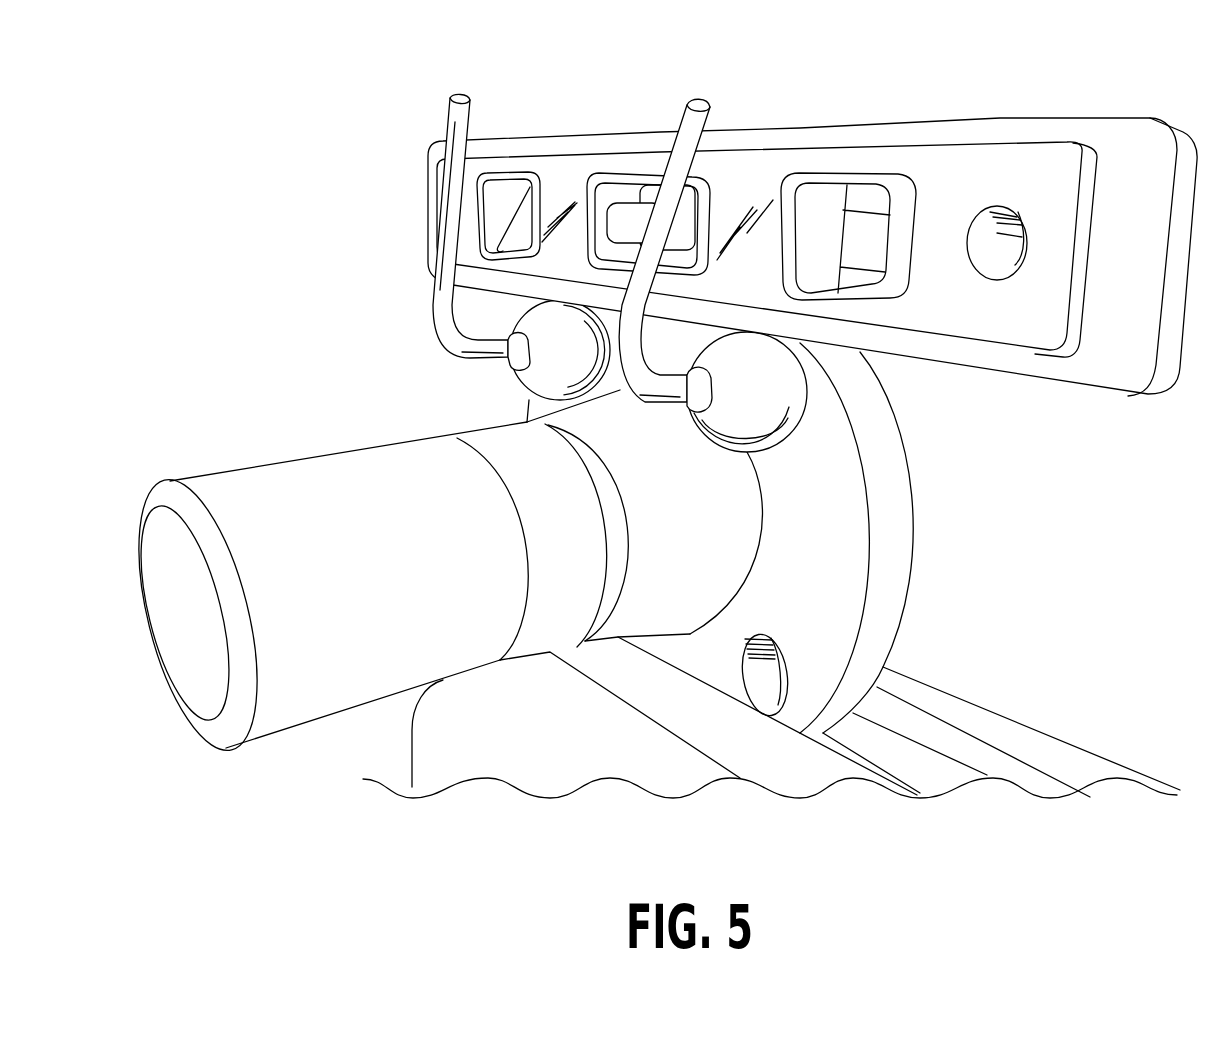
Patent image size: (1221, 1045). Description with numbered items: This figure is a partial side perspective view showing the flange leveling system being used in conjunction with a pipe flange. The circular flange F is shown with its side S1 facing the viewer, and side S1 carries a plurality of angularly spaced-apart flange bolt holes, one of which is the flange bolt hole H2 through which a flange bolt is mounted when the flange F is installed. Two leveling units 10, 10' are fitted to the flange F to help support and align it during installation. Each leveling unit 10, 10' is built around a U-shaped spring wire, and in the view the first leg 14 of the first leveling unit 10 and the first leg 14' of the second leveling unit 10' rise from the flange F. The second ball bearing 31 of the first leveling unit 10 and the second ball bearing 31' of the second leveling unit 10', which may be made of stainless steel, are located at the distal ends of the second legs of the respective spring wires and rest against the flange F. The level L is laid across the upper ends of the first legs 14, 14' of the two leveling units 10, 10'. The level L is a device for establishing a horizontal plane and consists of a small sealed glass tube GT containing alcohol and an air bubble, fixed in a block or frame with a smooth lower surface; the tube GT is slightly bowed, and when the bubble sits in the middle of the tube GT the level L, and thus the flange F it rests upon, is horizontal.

The leveling unit 10 is at (393, 347).
The leveling unit 10' is at (765, 82).
The first leg 14 is at (440, 232).
The first leg 14' is at (741, 248).
The second ball bearing 31 is at (526, 361).
The second ball bearing 31' is at (770, 417).
The glass tube GT is at (618, 230).
The level L is at (973, 173).
The flange F is at (893, 507).
The side S1 is at (818, 578).
The flange bolt hole H2 is at (752, 697).